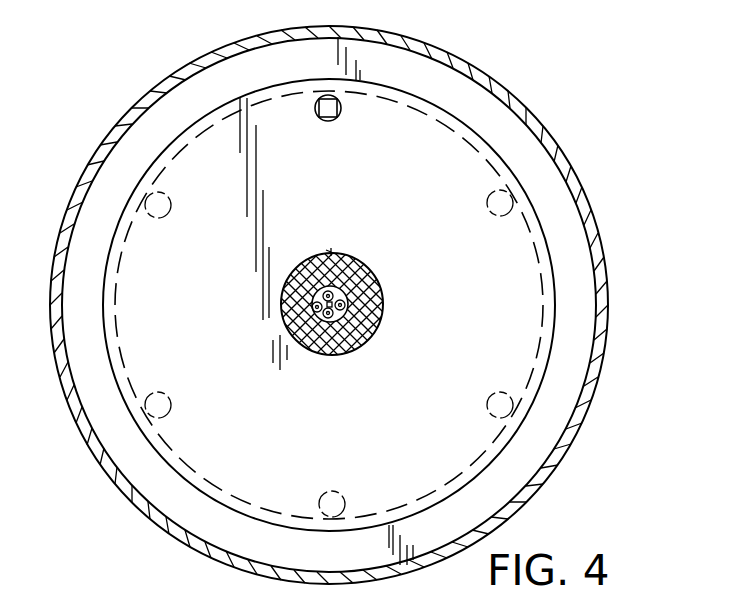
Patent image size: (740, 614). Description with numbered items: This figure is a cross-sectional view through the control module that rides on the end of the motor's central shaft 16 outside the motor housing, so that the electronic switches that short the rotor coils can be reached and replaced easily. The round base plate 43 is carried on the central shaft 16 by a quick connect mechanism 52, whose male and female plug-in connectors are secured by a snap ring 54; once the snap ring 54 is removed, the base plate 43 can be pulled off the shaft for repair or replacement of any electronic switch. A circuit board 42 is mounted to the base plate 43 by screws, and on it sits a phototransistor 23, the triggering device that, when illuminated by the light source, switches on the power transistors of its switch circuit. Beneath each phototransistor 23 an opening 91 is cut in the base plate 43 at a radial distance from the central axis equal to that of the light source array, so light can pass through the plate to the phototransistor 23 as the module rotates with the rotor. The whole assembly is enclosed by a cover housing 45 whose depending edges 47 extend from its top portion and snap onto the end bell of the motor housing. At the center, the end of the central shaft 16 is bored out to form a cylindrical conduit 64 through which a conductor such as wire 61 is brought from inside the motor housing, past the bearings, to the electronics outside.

The central shaft 16 is at (287, 322).
The phototransistor 23 is at (337, 107).
The circuit board 42 is at (541, 252).
The base plate 43 is at (445, 151).
The cover housing 45 is at (603, 387).
The depending edges 47 is at (600, 359).
The quick connect mechanism 52 is at (382, 283).
The snap ring 54 is at (324, 252).
The wire 61 is at (313, 303).
The cylindrical conduit 64 is at (308, 347).
The opening 91 is at (312, 108).